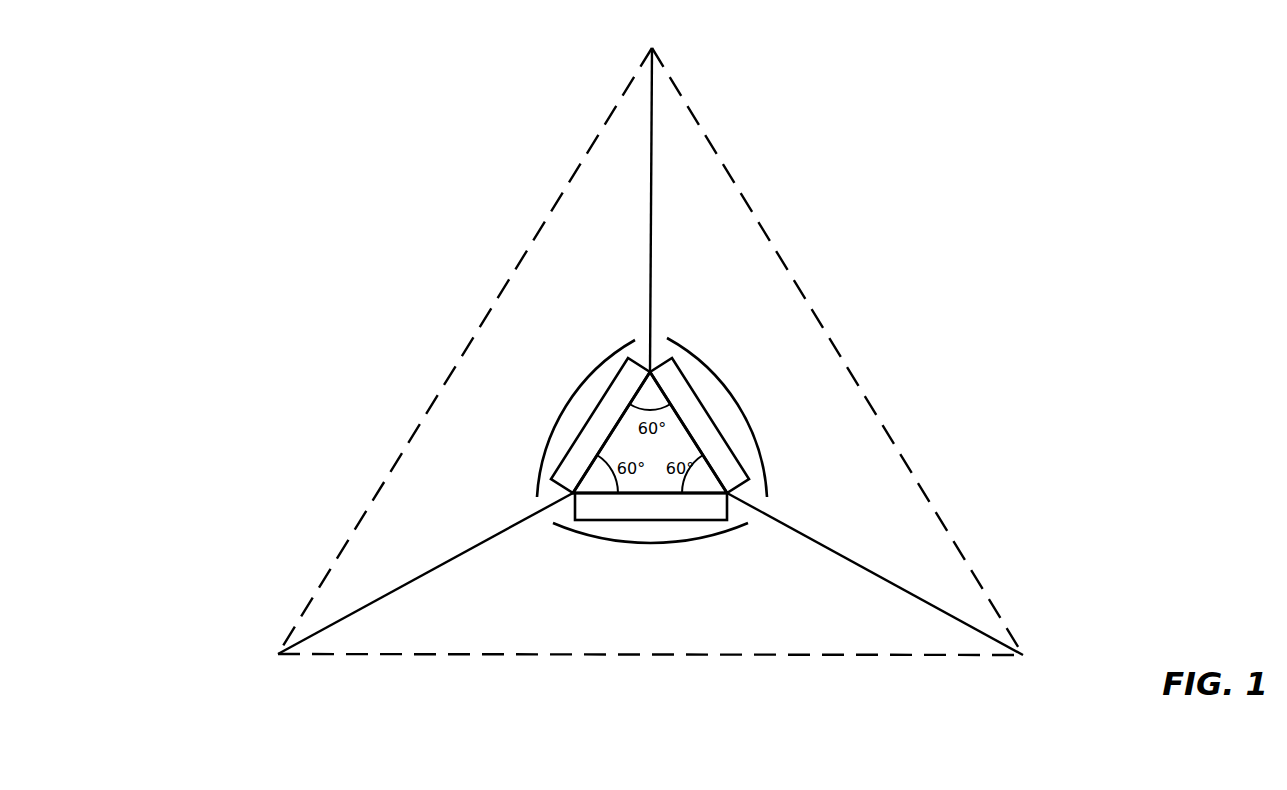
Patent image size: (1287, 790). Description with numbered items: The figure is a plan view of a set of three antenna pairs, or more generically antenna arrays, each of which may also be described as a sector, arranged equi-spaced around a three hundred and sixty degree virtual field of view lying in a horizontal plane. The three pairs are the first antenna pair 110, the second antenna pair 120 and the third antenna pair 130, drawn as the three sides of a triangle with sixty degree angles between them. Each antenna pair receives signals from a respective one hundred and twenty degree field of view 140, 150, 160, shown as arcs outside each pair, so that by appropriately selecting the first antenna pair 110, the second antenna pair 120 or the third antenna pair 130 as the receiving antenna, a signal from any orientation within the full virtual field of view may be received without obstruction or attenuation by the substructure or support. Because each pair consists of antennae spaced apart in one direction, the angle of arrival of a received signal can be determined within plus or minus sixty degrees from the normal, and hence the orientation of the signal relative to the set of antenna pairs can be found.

The antenna pair AP1 110 is at (693, 387).
The antenna pair AP2 120 is at (612, 521).
The antenna pair AP3 130 is at (612, 382).
The 120° field of view 140 is at (757, 445).
The 120° field of view 150 is at (703, 540).
The 120° field of view 160 is at (552, 433).